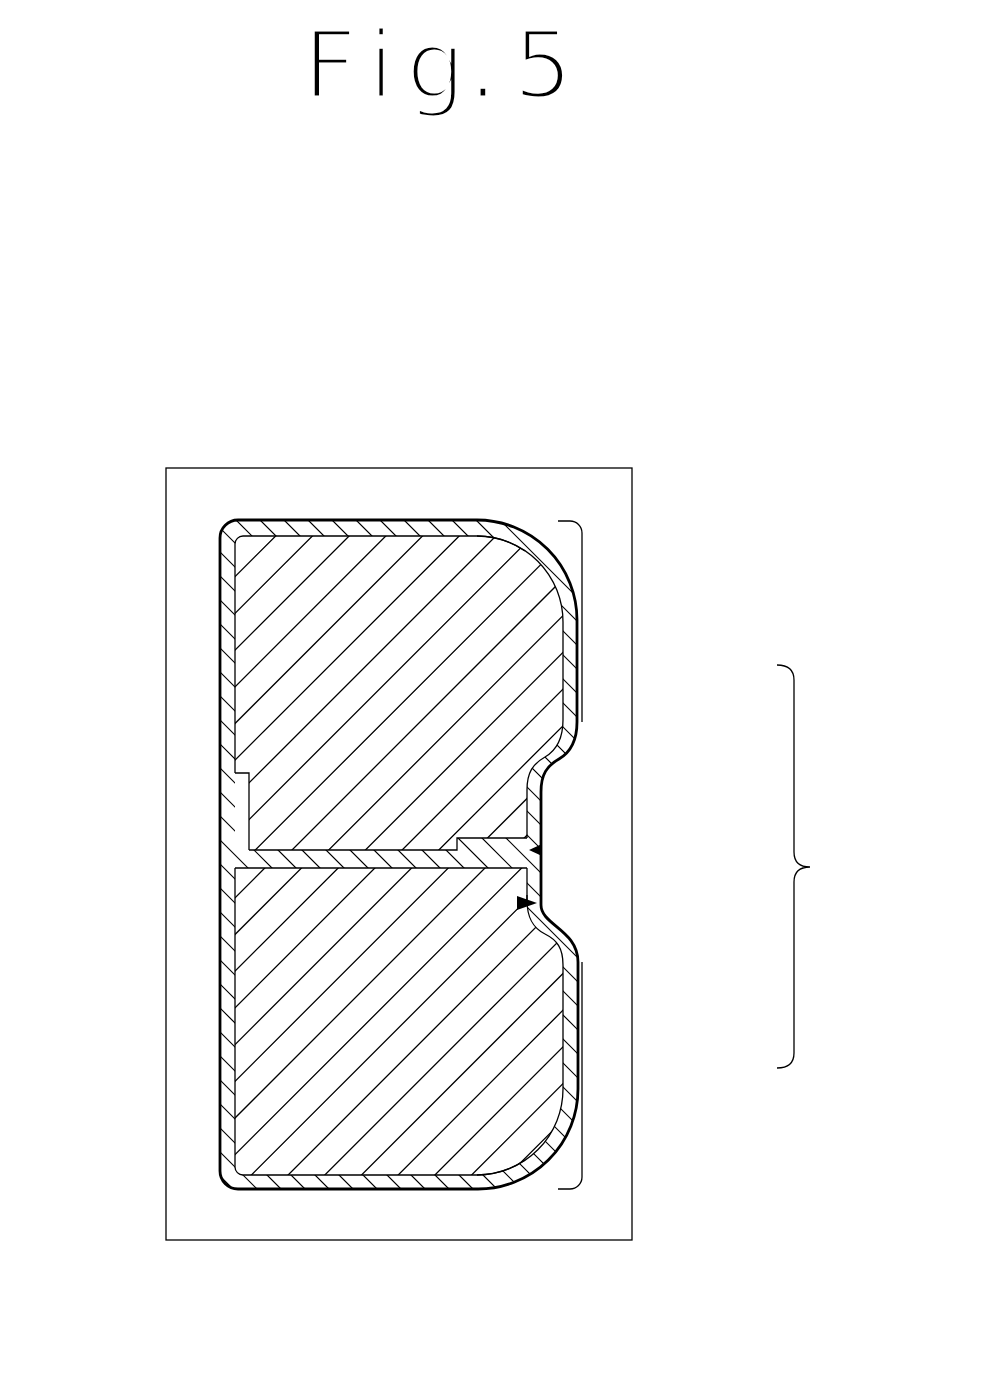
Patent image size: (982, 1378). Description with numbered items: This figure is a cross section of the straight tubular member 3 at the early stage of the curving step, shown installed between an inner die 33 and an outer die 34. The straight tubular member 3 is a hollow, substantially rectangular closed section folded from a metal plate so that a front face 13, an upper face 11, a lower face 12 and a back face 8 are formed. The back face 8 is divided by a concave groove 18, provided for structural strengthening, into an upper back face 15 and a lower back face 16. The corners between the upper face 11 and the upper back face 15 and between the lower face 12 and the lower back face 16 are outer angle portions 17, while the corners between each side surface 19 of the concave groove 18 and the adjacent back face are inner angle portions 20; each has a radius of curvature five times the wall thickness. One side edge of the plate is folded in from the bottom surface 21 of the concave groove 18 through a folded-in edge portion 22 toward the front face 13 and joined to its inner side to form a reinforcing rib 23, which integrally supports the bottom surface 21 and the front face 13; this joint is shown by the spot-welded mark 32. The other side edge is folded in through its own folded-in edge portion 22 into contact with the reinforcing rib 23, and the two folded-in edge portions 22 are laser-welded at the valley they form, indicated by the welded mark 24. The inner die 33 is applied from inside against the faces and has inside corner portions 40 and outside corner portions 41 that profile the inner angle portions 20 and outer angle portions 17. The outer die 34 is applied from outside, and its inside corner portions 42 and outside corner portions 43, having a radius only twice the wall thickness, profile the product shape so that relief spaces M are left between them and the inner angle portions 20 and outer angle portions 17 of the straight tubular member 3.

The straight tubular member 3 is at (206, 576).
The back face 8 is at (810, 866).
The upper face 11 is at (362, 520).
The lower face 12 is at (383, 1190).
The front face 13 is at (222, 615).
The upper back face 15 is at (580, 655).
The lower back face 16 is at (580, 1062).
The outer angle portion 17 is at (551, 556).
The concave groove 18 is at (518, 906).
The side surface of the concave groove 19 is at (541, 790).
The inner angle portion 20 is at (571, 745).
The bottom surface of the concave groove 21 is at (518, 902).
The folded-in edge portion 22 is at (541, 832).
The reinforcing rib 23 is at (240, 897).
The welded mark 24 is at (542, 850).
The spot-welded mark 32 is at (245, 800).
The inner die 33 is at (275, 733).
The outer die 34 is at (625, 1108).
The inside corner portion of the inner die 40 is at (580, 713).
The outside corner portion of the inner die 41 is at (531, 548).
The inside corner portion of the outer die 42 is at (549, 772).
The outside corner portion of the outer die 43 is at (584, 532).
The relief space M is at (596, 552).